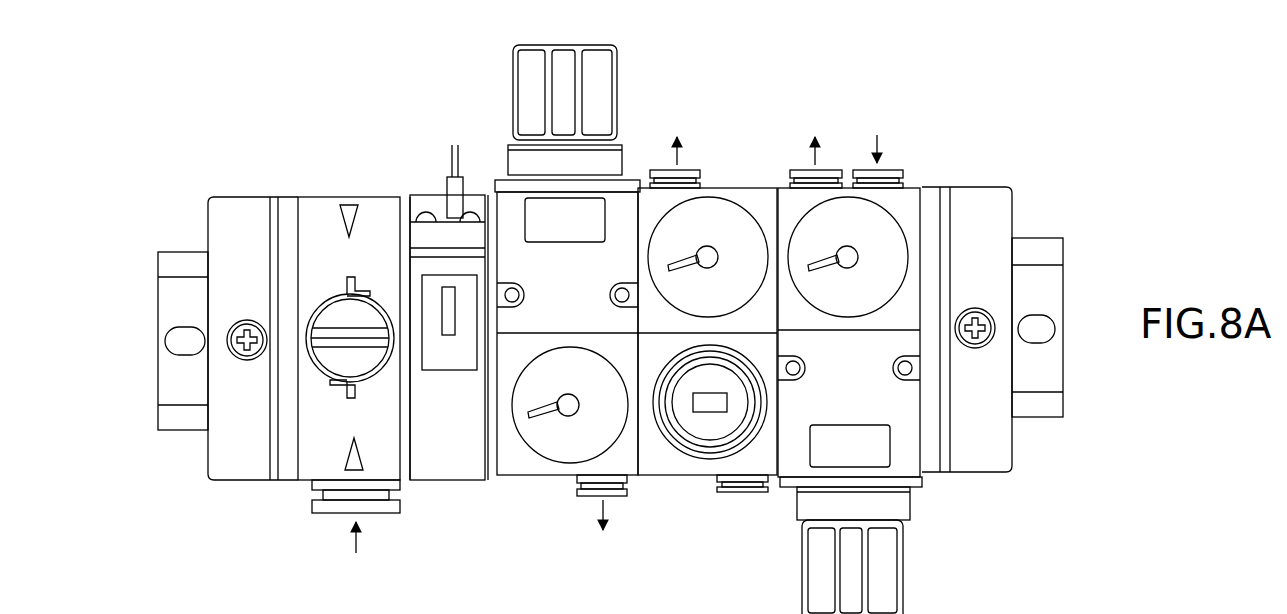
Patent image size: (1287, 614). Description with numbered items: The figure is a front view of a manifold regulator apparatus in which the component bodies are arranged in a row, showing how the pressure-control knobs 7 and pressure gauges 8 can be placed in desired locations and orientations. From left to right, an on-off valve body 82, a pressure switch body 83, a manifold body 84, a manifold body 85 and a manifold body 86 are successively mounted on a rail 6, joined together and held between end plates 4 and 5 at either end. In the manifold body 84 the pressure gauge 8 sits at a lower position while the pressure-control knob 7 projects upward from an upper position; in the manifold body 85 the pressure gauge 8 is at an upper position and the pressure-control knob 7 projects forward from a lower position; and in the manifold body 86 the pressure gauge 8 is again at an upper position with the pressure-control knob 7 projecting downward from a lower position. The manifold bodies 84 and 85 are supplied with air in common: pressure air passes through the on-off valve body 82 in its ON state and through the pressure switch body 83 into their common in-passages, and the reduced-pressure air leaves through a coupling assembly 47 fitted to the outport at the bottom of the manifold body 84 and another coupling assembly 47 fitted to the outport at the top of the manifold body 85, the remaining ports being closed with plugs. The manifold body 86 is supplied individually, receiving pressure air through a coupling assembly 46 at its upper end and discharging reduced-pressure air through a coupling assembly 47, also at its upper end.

The end plate 4 is at (240, 466).
The end plate 5 is at (988, 449).
The rail 6 is at (157, 250).
The pressure-control knob 7 is at (595, 68).
The pressure gauge 8 is at (570, 453).
The coupling assembly 46 is at (907, 166).
The coupling assembly 47 is at (704, 166).
The on-off valve body 82 is at (316, 194).
The pressure switch body 83 is at (423, 194).
The manifold body 84 is at (526, 478).
The manifold body 85 is at (690, 481).
The manifold body 86 is at (926, 186).